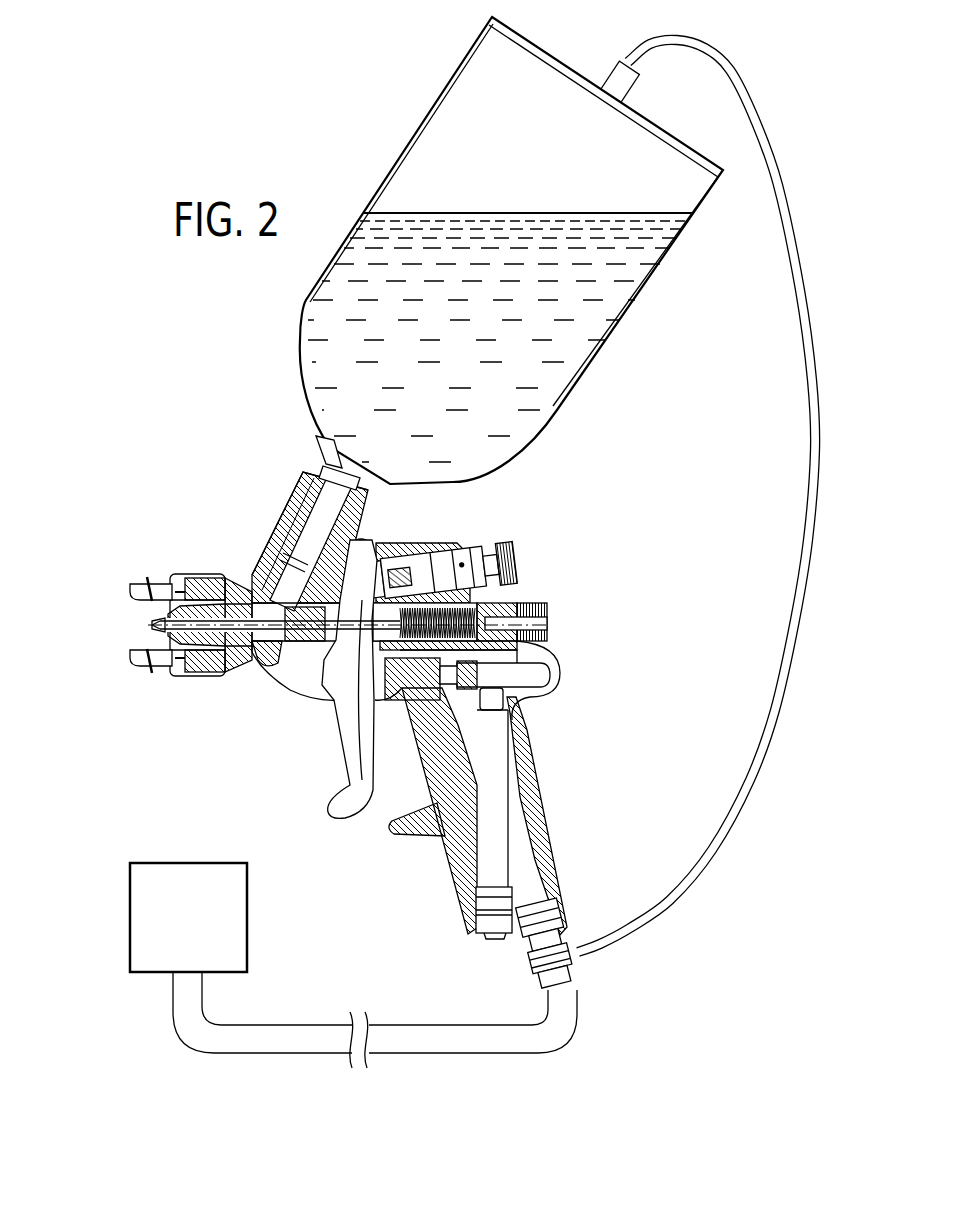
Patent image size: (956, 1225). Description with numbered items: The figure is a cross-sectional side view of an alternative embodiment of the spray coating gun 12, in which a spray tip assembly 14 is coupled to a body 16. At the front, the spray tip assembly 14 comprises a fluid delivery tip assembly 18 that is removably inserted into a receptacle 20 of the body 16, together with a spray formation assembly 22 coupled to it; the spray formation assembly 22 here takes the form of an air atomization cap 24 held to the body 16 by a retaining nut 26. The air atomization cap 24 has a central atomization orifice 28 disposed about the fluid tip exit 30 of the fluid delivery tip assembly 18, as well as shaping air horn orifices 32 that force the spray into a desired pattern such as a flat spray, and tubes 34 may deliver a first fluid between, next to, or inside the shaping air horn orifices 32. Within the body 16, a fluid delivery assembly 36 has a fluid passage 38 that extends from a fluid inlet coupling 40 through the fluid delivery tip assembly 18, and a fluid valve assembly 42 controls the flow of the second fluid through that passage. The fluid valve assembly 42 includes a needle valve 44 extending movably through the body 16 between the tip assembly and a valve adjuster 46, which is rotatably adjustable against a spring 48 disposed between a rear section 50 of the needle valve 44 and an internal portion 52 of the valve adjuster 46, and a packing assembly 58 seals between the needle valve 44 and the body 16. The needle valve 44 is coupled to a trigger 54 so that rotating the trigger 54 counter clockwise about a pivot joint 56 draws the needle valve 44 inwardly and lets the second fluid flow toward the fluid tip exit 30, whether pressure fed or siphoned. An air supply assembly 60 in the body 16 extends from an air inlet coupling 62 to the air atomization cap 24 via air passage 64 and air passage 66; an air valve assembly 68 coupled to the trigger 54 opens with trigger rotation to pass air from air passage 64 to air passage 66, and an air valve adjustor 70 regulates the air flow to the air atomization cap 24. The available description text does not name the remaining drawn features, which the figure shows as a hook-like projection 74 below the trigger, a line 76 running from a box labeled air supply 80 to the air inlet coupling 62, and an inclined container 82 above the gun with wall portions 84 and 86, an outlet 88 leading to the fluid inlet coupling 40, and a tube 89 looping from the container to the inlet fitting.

The spray coating gun 12 is at (660, 534).
The spray tip assembly 14 is at (219, 648).
The body 16 is at (470, 522).
The fluid delivery tip assembly 18 is at (187, 578).
The receptacle 20 is at (249, 665).
The spray formation assembly 22 is at (112, 580).
The air atomization cap 24 is at (130, 657).
The retaining nut 26 is at (190, 680).
The central atomization orifice 28 is at (152, 628).
The fluid tip exit 30 is at (152, 623).
The shaping air horn orifice 32 is at (142, 603).
The tube 34 is at (145, 580).
The fluid delivery assembly 36 is at (258, 522).
The fluid passage 38 is at (270, 562).
The fluid inlet coupling 40 is at (298, 498).
The fluid valve assembly 42 is at (284, 653).
The needle valve 44 is at (386, 658).
The valve adjuster 46 is at (550, 608).
The spring 48 is at (550, 640).
The rear section 50 is at (395, 600).
The internal portion 52 is at (517, 603).
The trigger 54 is at (345, 776).
The pivot joint 56 is at (368, 541).
The packing assembly 58 is at (314, 644).
The air supply assembly 60 is at (533, 738).
The air inlet coupling 62 is at (532, 975).
The air passage 64 is at (533, 858).
The air passage 66 is at (406, 582).
The air valve assembly 68 is at (508, 673).
The air valve adjustor 70 is at (493, 535).
The trigger guard 74 is at (447, 850).
The air supply hose 76 is at (287, 1025).
The air supply 80 is at (202, 958).
The fluid container 82 is at (378, 82).
The container wall 84 is at (628, 312).
The container wall 86 is at (300, 378).
The container outlet 88 is at (322, 470).
The vent tube 89 is at (810, 458).